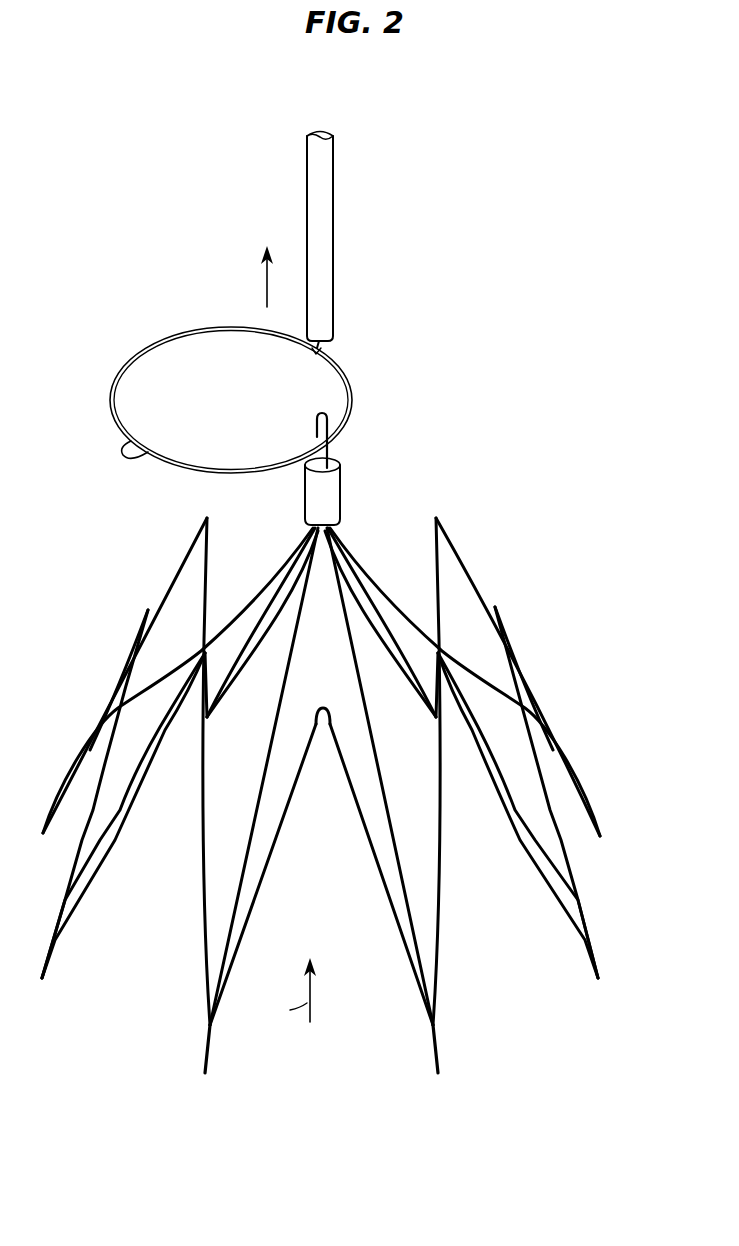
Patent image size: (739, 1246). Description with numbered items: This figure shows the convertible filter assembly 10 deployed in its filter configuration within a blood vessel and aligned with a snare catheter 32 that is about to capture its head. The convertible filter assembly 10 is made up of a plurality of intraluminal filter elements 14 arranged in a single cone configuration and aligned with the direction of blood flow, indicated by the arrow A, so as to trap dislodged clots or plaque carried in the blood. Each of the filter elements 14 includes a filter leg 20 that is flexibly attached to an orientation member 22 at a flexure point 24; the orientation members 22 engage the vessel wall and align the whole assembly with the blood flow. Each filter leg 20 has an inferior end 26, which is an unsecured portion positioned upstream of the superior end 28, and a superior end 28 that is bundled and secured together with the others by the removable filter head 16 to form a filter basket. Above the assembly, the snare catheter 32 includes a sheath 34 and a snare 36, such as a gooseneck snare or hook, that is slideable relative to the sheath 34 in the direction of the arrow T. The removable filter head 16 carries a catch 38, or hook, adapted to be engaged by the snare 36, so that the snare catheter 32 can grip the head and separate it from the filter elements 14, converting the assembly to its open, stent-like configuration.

The convertible filter assembly 10 is at (522, 551).
The intraluminal filter elements 14 is at (555, 703).
The removable filter head 16 is at (342, 492).
The filter leg 20 is at (257, 797).
The orientation member 22 is at (200, 879).
The flexure point 24 is at (212, 1054).
The inferior end 26 is at (441, 921).
The superior end 28 is at (340, 595).
The snare catheter 32 is at (422, 207).
The sheath 34 is at (333, 258).
The snare 36 is at (173, 336).
The catch 38 is at (324, 414).